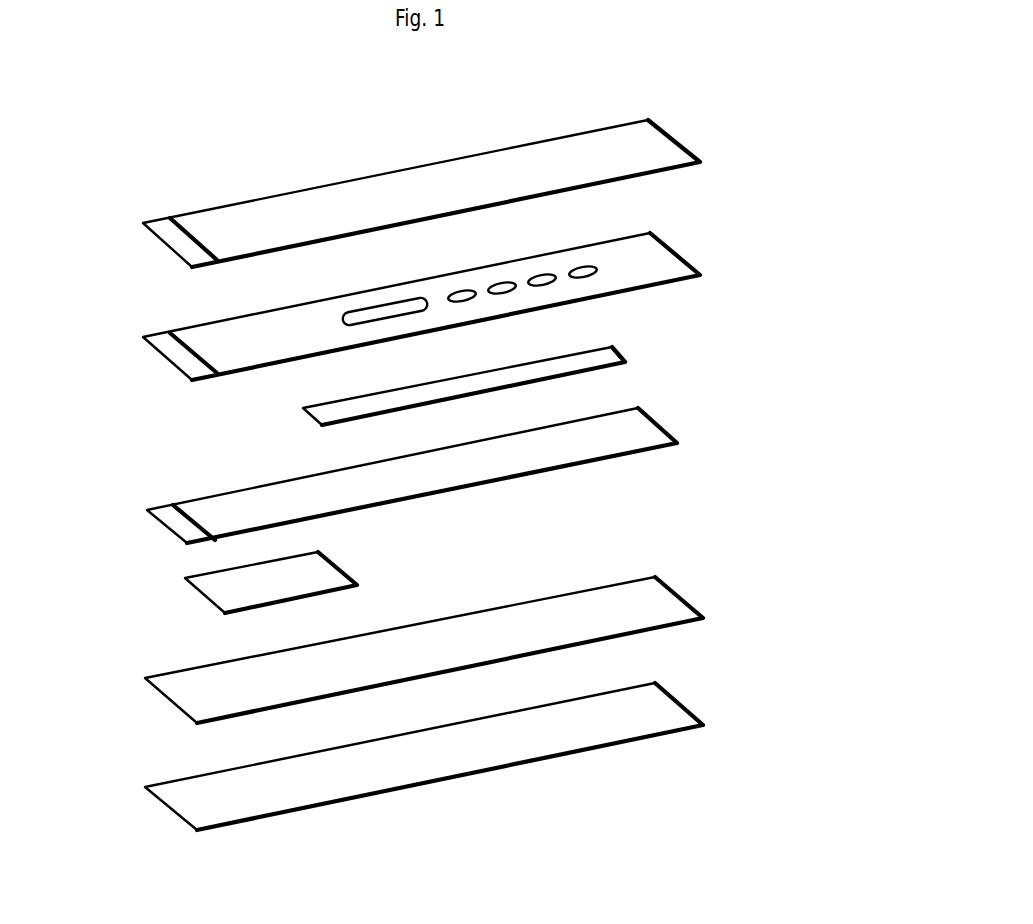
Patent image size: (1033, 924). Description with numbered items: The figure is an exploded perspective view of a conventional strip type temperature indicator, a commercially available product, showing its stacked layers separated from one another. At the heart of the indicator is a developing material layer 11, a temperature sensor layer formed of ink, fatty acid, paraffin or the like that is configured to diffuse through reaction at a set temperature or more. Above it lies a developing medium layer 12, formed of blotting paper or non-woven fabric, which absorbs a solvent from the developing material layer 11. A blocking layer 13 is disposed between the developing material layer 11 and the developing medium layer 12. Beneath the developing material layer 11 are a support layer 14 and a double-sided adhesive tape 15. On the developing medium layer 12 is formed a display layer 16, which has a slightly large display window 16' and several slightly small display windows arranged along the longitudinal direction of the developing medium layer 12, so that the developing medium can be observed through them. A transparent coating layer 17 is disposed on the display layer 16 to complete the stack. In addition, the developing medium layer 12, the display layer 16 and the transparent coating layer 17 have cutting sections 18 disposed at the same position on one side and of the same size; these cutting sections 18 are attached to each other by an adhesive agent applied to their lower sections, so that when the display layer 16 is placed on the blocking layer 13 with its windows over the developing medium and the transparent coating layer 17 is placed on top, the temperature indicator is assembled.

The developing material layer 11 is at (327, 573).
The developing medium layer 12 is at (607, 353).
The blocking layer 13 is at (653, 430).
The support layer 14 is at (660, 598).
The double-sided adhesive tape 15 is at (663, 707).
The display layer 16 is at (462, 233).
The display window 16' is at (385, 217).
The transparent coating layer 17 is at (317, 200).
The cutting sections 18 is at (170, 240).